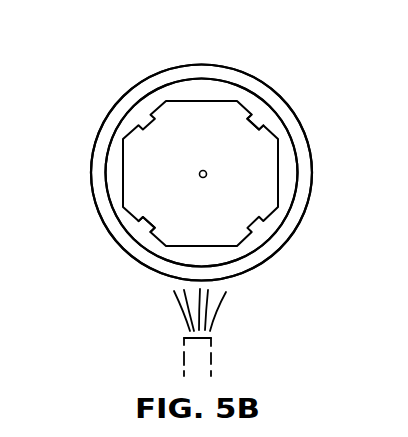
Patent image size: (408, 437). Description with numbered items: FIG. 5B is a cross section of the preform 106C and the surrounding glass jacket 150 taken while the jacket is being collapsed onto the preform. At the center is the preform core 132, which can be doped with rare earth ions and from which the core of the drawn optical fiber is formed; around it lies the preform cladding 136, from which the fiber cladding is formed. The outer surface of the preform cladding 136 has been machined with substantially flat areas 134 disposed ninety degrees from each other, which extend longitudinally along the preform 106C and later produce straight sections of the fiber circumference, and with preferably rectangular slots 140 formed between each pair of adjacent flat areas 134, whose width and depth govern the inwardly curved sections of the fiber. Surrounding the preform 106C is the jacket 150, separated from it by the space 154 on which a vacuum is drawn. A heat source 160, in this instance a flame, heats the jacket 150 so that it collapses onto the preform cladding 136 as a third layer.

The preform 106C is at (121, 79).
The preform core 132 is at (206, 177).
The flat areas 134 is at (204, 101).
The preform cladding 136 is at (167, 212).
The slots 140 is at (262, 122).
The jacket 150 is at (297, 237).
The space 154 is at (289, 176).
The heat source 160 is at (221, 318).